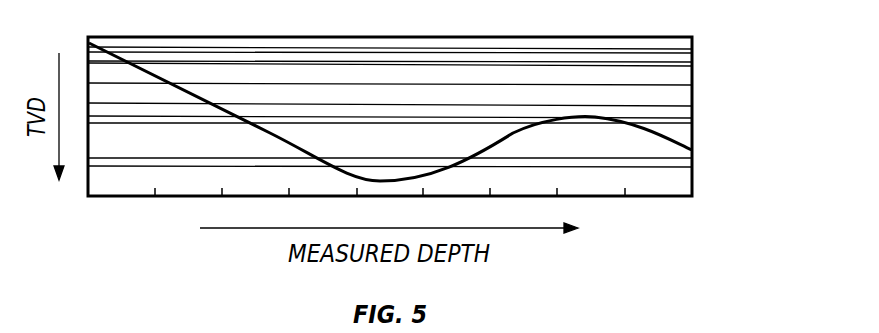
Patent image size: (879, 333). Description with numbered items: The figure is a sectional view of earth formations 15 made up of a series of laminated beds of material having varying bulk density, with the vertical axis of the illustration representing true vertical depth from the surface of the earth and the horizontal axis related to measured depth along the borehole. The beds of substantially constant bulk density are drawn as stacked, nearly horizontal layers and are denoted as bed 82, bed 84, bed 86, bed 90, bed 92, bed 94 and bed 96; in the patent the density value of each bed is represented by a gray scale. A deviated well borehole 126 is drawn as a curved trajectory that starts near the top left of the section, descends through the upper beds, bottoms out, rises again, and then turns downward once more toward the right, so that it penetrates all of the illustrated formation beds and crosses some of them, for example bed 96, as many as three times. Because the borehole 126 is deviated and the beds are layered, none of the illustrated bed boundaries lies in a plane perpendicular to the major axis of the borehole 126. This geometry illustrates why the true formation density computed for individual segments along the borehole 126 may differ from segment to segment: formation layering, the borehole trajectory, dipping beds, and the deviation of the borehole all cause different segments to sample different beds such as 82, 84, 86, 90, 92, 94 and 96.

The formation model 15 is at (702, 97).
The formation bed 82 is at (390, 33).
The formation bed 84 is at (390, 61).
The formation bed 86 is at (390, 157).
The formation bed 90 is at (390, 204).
The formation bed 92 is at (390, 102).
The formation bed 94 is at (390, 112).
The formation bed 96 is at (390, 69).
The deviated well borehole 126 is at (390, 112).